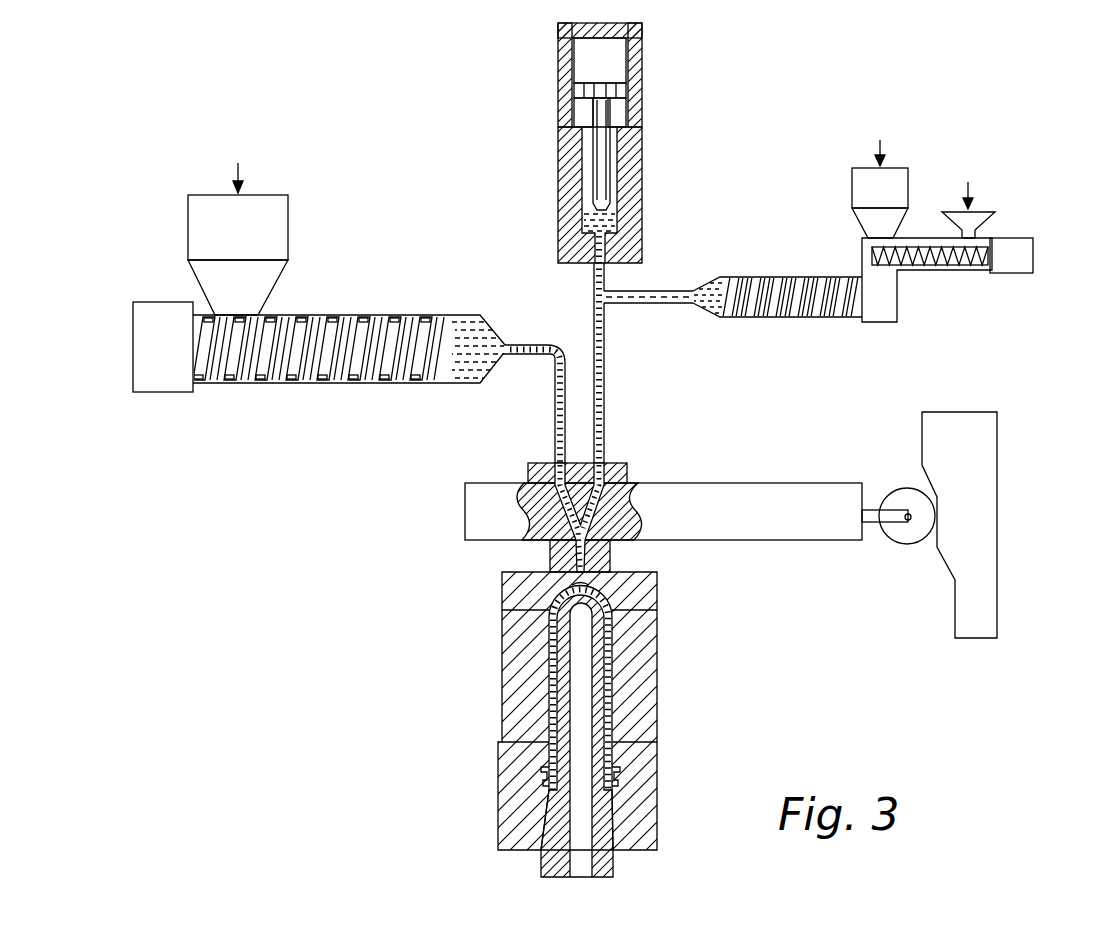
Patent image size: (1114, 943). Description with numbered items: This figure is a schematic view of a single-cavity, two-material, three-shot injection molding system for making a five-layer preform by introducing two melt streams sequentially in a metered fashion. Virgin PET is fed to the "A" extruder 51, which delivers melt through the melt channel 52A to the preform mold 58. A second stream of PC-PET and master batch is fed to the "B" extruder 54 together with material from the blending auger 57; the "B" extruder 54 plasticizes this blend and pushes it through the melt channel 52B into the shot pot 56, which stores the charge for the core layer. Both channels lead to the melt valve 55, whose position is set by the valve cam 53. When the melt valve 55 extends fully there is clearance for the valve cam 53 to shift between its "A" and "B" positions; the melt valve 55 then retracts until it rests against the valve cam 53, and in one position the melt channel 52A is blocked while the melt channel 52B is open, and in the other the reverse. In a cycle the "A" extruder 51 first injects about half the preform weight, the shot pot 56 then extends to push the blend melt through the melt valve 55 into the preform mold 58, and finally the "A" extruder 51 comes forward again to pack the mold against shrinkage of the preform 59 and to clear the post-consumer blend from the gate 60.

The "A" extruder 51 is at (368, 298).
The melt channel from "A" extruder 52A is at (553, 428).
The melt channel from "B" extruder 52B is at (605, 424).
The valve cam 53 is at (997, 475).
The "B" extruder 54 is at (902, 307).
The melt valve 55 is at (773, 478).
The shot pot 56 is at (551, 131).
The blending auger 57 is at (1022, 230).
The preform mold 58 is at (495, 636).
The preform 59 is at (548, 657).
The gate 60 is at (590, 583).